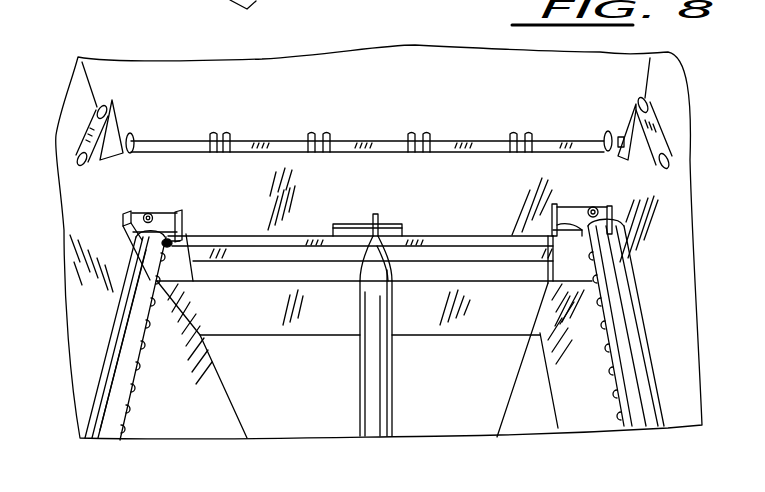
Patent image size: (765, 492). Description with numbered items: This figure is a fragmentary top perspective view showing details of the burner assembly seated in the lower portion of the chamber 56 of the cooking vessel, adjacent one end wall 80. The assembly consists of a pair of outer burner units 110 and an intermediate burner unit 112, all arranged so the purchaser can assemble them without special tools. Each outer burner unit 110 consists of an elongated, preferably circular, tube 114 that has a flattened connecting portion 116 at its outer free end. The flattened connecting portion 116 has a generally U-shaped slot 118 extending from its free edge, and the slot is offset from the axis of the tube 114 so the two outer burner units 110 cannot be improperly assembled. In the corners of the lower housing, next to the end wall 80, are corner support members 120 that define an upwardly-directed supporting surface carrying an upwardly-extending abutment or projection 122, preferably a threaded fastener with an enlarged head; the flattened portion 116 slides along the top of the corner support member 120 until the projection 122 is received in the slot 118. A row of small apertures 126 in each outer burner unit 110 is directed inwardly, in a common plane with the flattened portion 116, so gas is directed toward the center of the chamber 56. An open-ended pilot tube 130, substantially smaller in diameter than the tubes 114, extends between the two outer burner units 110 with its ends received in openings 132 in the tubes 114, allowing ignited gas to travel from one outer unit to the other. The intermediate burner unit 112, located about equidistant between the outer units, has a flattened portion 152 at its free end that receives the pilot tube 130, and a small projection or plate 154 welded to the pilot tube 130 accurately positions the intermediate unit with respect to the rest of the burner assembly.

The chamber 56 is at (445, 103).
The end wall 80 is at (388, 108).
The outer burner unit 110 is at (382, 309).
The intermediate burner unit 112 is at (414, 304).
The tube 114 is at (143, 297).
The flattened connecting portion 116 is at (164, 188).
The U-shaped slot 118 is at (146, 214).
The corner support member 120 is at (182, 267).
The abutment or projection 122 is at (155, 209).
The apertures 126 is at (137, 361).
The pilot tube 130 is at (477, 242).
The opening 132 is at (175, 244).
The flattened portion 152 is at (377, 214).
The projection or plate 154 is at (340, 225).